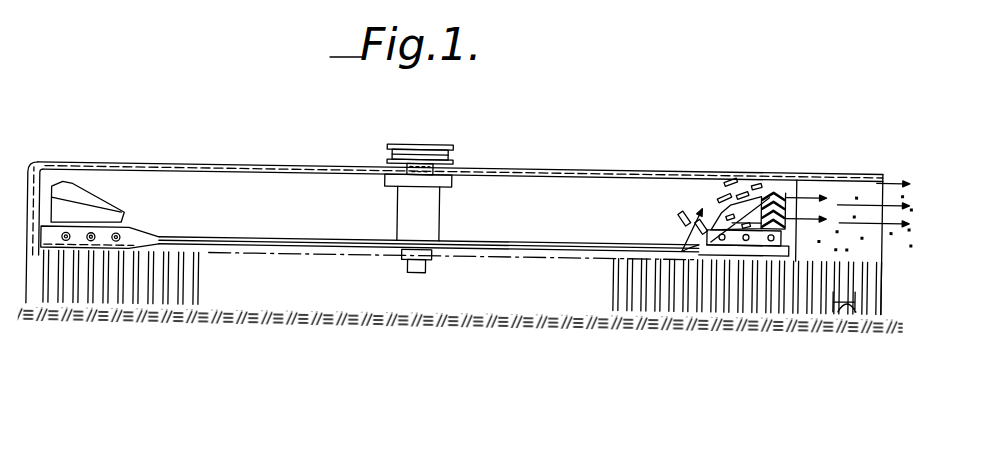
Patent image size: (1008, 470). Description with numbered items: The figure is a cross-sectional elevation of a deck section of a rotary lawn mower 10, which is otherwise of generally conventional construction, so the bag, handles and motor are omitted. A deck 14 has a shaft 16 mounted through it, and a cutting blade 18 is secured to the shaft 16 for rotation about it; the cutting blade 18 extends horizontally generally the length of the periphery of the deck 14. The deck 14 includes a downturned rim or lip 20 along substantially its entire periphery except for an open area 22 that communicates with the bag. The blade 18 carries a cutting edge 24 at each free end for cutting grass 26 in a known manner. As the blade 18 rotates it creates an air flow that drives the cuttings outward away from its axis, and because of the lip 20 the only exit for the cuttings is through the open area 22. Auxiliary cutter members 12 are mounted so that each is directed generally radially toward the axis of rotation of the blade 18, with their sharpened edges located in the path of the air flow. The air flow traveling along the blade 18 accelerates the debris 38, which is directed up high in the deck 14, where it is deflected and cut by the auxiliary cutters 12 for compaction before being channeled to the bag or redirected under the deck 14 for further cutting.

The rotary lawn mower 10 is at (461, 198).
The auxiliary cutter members 12 is at (777, 192).
The deck 14 is at (517, 171).
The shaft 16 is at (405, 168).
The cutting blade 18 is at (550, 242).
The downturned rim or lip 20 is at (30, 168).
The open area 22 is at (875, 197).
The cutting edge 24 is at (737, 250).
The grass 26 is at (857, 300).
The debris 38 is at (690, 224).